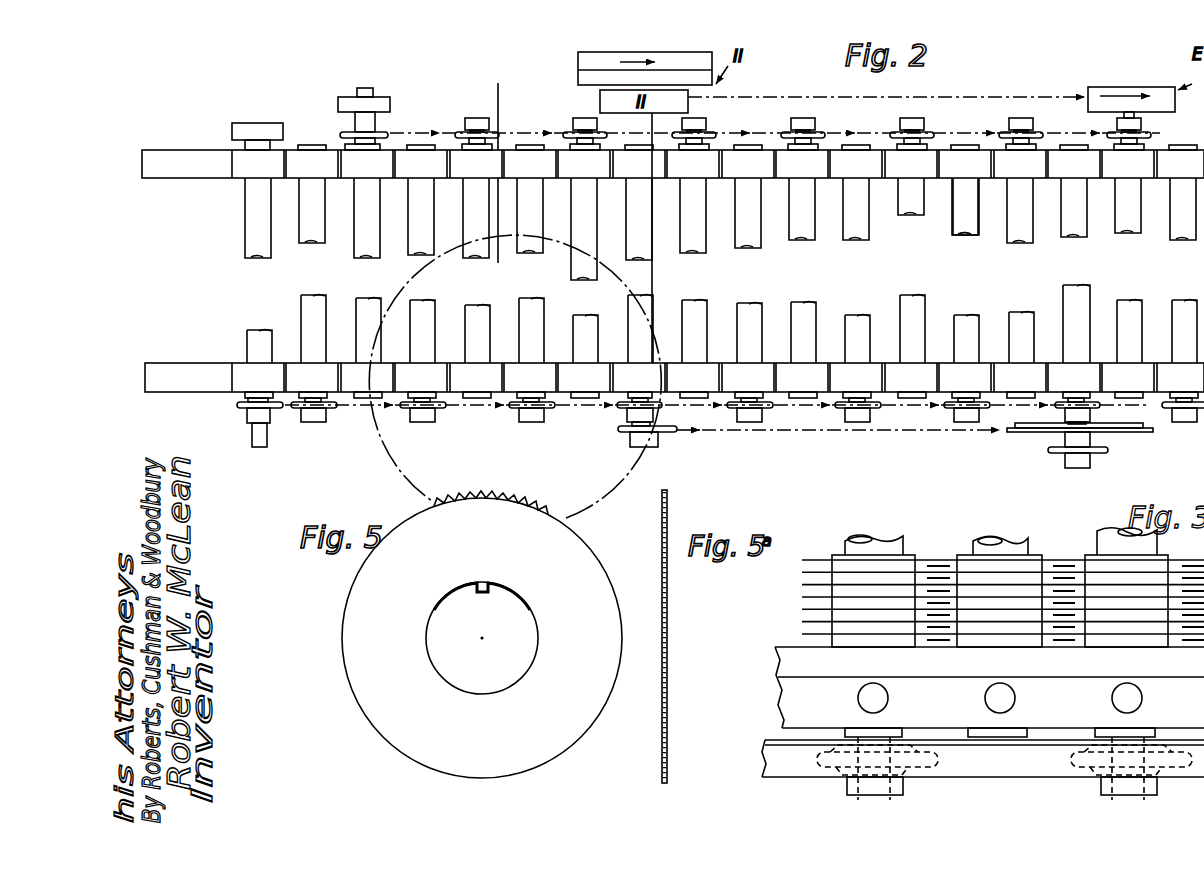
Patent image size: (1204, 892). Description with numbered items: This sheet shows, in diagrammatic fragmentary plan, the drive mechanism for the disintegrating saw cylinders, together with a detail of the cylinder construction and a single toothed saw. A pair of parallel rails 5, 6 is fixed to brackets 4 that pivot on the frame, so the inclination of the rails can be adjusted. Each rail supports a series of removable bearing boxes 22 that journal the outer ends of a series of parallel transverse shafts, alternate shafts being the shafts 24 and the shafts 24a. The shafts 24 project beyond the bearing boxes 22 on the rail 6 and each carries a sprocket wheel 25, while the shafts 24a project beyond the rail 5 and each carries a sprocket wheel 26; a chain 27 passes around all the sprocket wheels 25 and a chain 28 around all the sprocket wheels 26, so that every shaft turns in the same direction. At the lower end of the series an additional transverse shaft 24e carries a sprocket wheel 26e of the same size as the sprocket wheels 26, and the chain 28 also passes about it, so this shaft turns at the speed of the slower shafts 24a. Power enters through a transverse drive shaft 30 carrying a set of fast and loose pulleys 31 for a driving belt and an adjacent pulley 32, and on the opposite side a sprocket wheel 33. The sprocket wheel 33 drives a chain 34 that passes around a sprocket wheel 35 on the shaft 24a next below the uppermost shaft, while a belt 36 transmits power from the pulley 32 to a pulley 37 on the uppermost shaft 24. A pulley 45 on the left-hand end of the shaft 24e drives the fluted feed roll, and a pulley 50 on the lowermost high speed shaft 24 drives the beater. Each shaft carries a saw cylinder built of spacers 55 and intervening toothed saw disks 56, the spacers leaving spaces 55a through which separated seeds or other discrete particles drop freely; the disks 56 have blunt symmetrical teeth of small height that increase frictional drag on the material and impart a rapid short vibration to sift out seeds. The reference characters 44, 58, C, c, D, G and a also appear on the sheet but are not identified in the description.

In FIG. 2, the brackets 4 is at (491, 179).
In FIG. 2, the rail 5 is at (190, 384).
In FIG. 2, the rail 6 is at (208, 159).
In FIG. 2, the bearing boxes 22 is at (1150, 362).
In FIG. 2, the shafts 24 is at (367, 295).
In FIG. 5A, the shafts 24 is at (1027, 540).
In FIG. 2, the shafts 24a is at (1070, 295).
In FIG. 5A, the shafts 24a is at (893, 537).
In FIG. 2, the additional transverse shaft 24e is at (250, 346).
In FIG. 2, the sprocket wheel 25 is at (1003, 132).
In FIG. 5A, the sprocket wheel 26 is at (828, 770).
In FIG. 2, the sprocket wheel 26e is at (240, 408).
In FIG. 2, the chain 27 is at (1075, 130).
In FIG. 2, the chain 28 is at (598, 415).
In FIG. 2, the transverse drive shaft 30 is at (627, 237).
In FIG. 2, the fast and loose pulleys 31 is at (580, 70).
In FIG. 2, the pulley 32 is at (688, 97).
In FIG. 2, the sprocket wheel 33 is at (638, 428).
In FIG. 2, the chain 34 is at (722, 432).
In FIG. 2, the sprocket wheel 35 is at (1087, 437).
In FIG. 2, the belt 36 is at (985, 94).
In FIG. 2, the pulley 37 is at (1146, 87).
In FIG. 2, the bolt assembly 44 is at (1087, 438).
In FIG. 2, the pulley 45 is at (269, 128).
In FIG. 2, the pulley 50 is at (380, 102).
In FIG. 5A, the spacers 55 is at (852, 638).
In FIG. 5A, the spaces 55a is at (922, 640).
In FIG. 5, the toothed saw disks 56 is at (570, 568).
In FIG. 5A, the toothed saw disks 56 is at (1044, 563).
In FIG. 5, the teeth 58 is at (548, 512).
In FIG. 2, the washer C is at (394, 132).
In FIG. 2, the washer c is at (772, 408).
In FIG. 2, the bolt D is at (1102, 406).
In FIG. 2, the washer G is at (672, 434).
In FIG. 2, the plate a is at (1155, 428).